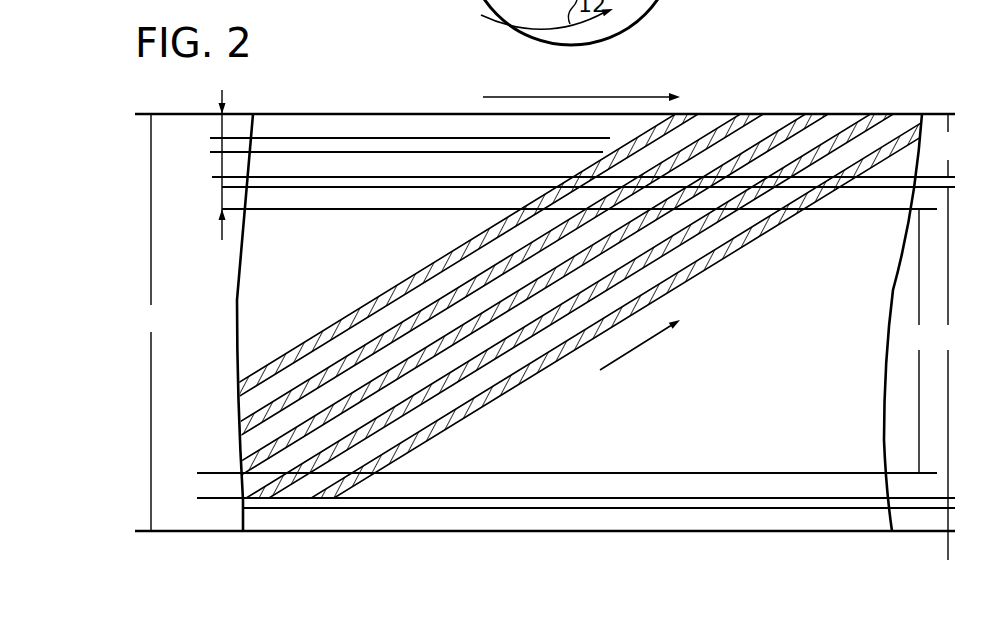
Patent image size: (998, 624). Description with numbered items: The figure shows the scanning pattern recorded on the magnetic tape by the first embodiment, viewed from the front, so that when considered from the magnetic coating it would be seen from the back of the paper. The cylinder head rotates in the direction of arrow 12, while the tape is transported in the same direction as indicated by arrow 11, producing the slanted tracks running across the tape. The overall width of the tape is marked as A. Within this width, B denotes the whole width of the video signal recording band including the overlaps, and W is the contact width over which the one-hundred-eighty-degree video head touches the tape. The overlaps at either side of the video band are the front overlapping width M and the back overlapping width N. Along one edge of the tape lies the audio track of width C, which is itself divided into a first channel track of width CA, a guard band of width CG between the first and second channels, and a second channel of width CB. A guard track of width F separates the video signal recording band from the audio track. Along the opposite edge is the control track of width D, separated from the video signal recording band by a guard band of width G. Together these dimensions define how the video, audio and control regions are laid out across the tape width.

The arrow 11 is at (504, 97).
The arrow 12 is at (653, 338).
The width of the tape A is at (151, 322).
The whole width of the video signal recording band B is at (948, 347).
The width of the audio track C is at (948, 145).
The width of the first channel track CA is at (567, 169).
The width of the second channel CB is at (395, 127).
The width of the guard band between the first and second channels CG is at (391, 145).
The width of the control track D is at (961, 534).
The width of the guard track F is at (222, 187).
The width of the guard band G is at (610, 504).
The front overlapping width M is at (219, 473).
The back overlapping width N is at (222, 209).
The contact width W is at (919, 341).